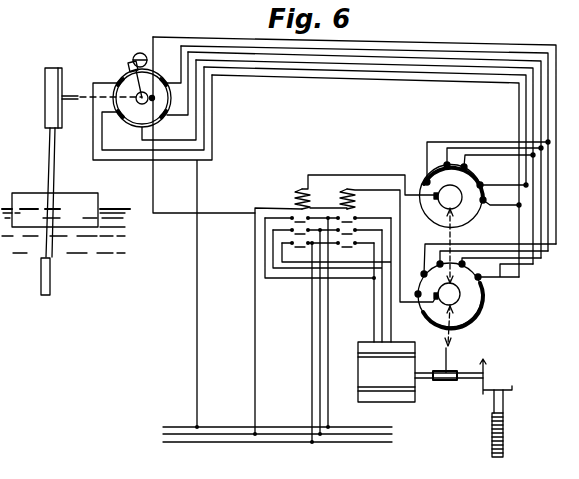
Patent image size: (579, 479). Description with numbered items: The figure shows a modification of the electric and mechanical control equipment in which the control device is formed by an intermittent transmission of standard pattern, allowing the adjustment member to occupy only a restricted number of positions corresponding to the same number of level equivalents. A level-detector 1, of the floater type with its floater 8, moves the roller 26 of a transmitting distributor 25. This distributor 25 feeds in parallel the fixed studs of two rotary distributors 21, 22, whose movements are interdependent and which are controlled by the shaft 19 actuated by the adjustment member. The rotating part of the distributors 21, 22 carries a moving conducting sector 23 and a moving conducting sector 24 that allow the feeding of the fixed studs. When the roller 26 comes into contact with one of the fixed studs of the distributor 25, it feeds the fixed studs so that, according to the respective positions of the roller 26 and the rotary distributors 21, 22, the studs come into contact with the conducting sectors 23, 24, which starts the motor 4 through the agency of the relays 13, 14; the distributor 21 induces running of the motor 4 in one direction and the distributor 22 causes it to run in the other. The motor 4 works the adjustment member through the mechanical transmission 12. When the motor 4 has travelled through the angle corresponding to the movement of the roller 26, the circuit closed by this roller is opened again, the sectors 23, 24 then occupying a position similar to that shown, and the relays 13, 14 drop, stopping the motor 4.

The level-detector 1 is at (45, 97).
The floater 8 is at (20, 200).
The transmitting distributor 25 is at (128, 122).
The roller 26 is at (133, 62).
The contact-maker 13 is at (298, 189).
The contact-maker 14 is at (352, 190).
The moving sector 23 is at (428, 163).
The distributor 21 is at (471, 221).
The distributor 22 is at (483, 292).
The moving sector 24 is at (466, 320).
The shaft 19 is at (448, 356).
The motor 4 is at (358, 378).
The mechanical transmission 12 is at (504, 405).